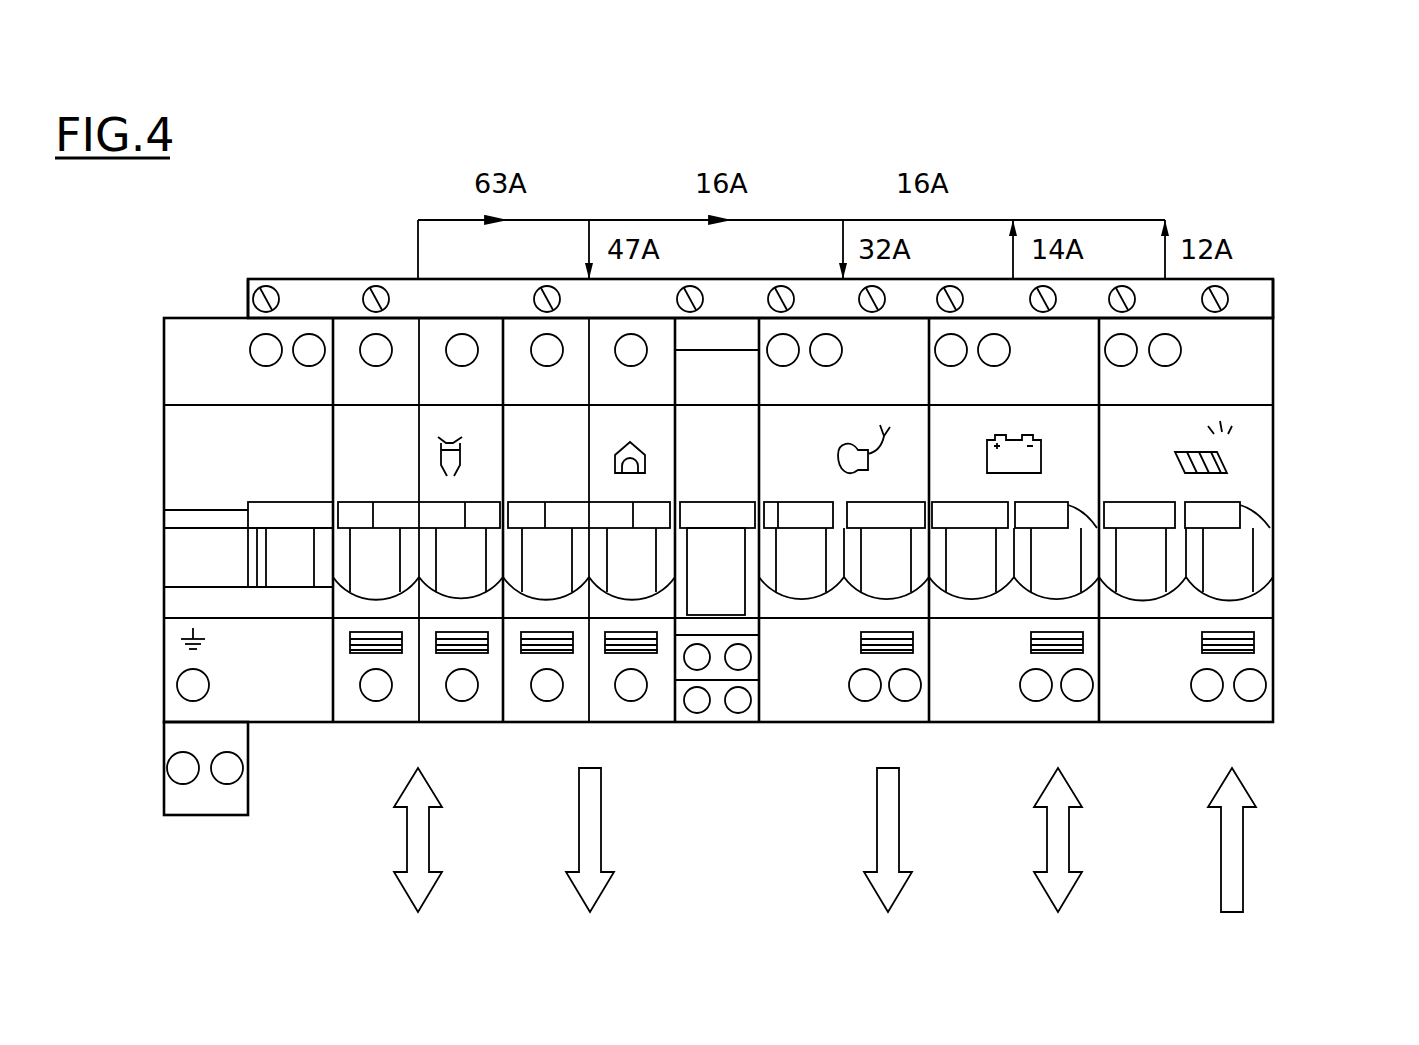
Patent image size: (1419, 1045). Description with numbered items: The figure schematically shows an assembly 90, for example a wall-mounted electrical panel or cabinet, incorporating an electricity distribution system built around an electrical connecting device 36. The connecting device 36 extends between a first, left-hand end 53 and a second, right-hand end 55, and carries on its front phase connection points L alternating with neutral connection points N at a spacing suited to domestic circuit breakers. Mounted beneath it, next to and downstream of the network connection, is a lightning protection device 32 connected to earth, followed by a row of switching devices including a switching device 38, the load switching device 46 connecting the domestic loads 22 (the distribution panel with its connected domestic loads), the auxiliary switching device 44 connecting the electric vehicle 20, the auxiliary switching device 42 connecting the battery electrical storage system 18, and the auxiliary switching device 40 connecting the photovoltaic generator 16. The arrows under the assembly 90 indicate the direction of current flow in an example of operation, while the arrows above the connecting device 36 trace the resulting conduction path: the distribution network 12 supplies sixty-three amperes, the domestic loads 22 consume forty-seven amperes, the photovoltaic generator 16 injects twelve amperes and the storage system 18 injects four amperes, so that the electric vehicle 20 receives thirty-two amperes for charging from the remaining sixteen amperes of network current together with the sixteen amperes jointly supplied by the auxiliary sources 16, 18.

The assembly 90 is at (1340, 140).
The connecting device 36 is at (1242, 279).
The first end 53 is at (228, 299).
The second end 55 is at (1285, 299).
The lightning protection device 32 is at (160, 564).
The circuit breaker module 38 is at (373, 727).
The load switching device 46 is at (545, 727).
The auxiliary switching device 44 is at (800, 727).
The auxiliary switching device 42 is at (970, 727).
The auxiliary switching device 40 is at (1140, 727).
The distribution network 12 is at (414, 884).
The domestic loads 22 is at (584, 884).
The electric vehicle 20 is at (883, 884).
The electrical storage system 18 is at (1053, 884).
The photovoltaic generator 16 is at (1225, 884).